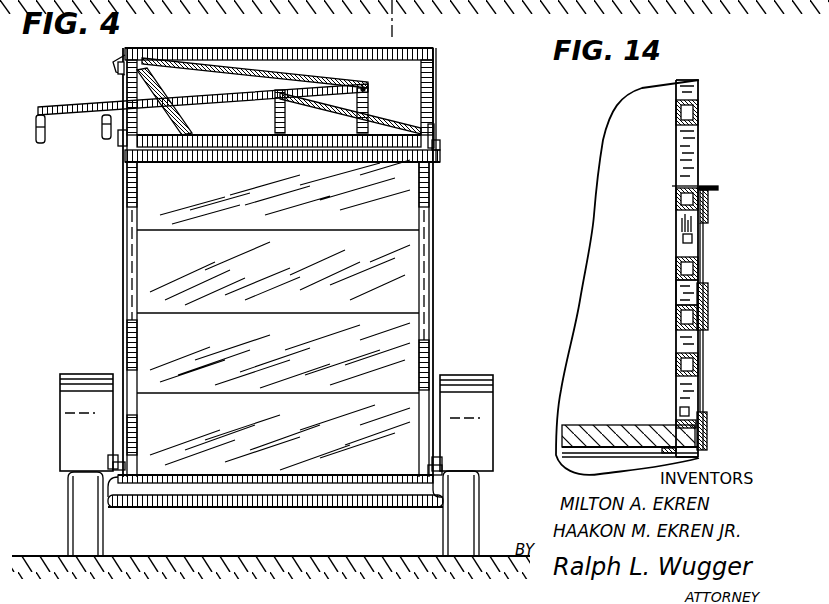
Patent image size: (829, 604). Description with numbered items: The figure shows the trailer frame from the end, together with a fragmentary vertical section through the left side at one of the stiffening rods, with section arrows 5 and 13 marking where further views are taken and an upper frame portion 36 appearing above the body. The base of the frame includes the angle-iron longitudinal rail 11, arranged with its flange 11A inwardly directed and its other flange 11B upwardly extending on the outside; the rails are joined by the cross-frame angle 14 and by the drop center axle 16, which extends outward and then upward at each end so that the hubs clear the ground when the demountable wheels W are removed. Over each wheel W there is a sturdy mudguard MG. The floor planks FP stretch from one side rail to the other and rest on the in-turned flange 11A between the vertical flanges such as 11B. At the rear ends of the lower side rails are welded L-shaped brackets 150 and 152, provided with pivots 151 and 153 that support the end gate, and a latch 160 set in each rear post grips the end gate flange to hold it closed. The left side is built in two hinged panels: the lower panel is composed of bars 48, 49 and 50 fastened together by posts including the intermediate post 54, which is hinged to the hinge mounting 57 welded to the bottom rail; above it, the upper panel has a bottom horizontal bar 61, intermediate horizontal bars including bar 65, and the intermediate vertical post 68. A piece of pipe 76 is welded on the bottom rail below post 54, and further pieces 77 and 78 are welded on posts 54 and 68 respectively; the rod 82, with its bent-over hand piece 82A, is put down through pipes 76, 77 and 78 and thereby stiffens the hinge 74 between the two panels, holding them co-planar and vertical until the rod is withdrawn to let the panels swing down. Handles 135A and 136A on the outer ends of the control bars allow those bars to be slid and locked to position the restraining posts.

In FIG. 4, the section line 5 is at (366, 22).
In FIG. 4, the section line 13 is at (140, 114).
In FIG. 4, the upper frame housing 36 is at (286, 48).
In FIG. 4, the handle 135A is at (38, 140).
In FIG. 4, the handle 136A is at (100, 125).
In FIG. 4, the latch 160 is at (120, 140).
In FIG. 4, the drop center axle 16 is at (272, 510).
In FIG. 4, the mudguard MG is at (80, 374).
In FIG. 4, the demountable wheel W is at (85, 515).
In FIG. 4, the L-shaped bracket 150 is at (112, 466).
In FIG. 4, the pivot 151 is at (108, 460).
In FIG. 4, the L-shaped bracket 152 is at (445, 478).
In FIG. 4, the pivot 153 is at (440, 468).
In FIG. 14, the cross-frame angle 14 is at (578, 462).
In FIG. 14, the floor planks FP is at (598, 432).
In FIG. 14, the intermediate vertical post 68 is at (697, 155).
In FIG. 14, the intermediate horizontal bar 65 is at (677, 112).
In FIG. 14, the bottom horizontal bar 61 is at (676, 192).
In FIG. 14, the bent-over hand piece 82A is at (714, 186).
In FIG. 14, the piece of pipe 78 is at (708, 218).
In FIG. 14, the rod 82 is at (703, 258).
In FIG. 14, the hinge 74 is at (683, 240).
In FIG. 14, the bar 50 is at (676, 266).
In FIG. 14, the intermediate post 54 is at (676, 293).
In FIG. 14, the piece of pipe 77 is at (708, 310).
In FIG. 14, the bar 49 is at (676, 316).
In FIG. 14, the bottom rail 48 is at (676, 365).
In FIG. 14, the hinge mounting 57 is at (680, 412).
In FIG. 14, the piece of pipe 76 is at (708, 416).
In FIG. 14, the flange 11B is at (708, 432).
In FIG. 14, the longitudinal rail 11 is at (708, 450).
In FIG. 14, the flange 11A is at (700, 456).